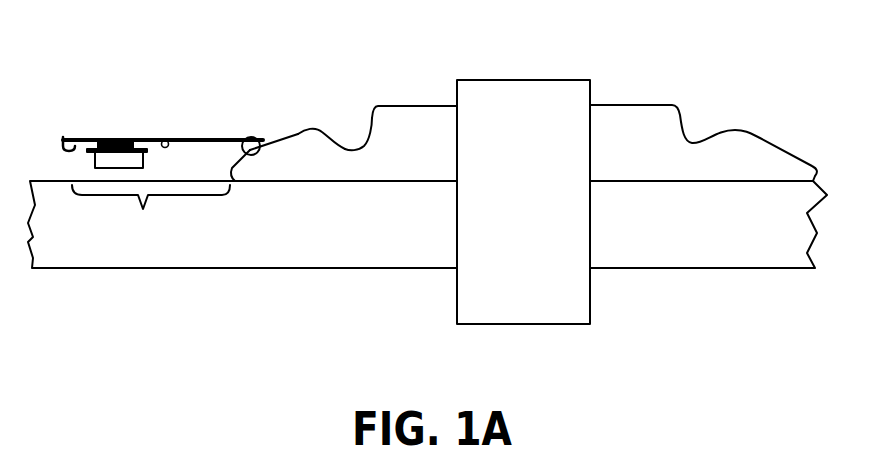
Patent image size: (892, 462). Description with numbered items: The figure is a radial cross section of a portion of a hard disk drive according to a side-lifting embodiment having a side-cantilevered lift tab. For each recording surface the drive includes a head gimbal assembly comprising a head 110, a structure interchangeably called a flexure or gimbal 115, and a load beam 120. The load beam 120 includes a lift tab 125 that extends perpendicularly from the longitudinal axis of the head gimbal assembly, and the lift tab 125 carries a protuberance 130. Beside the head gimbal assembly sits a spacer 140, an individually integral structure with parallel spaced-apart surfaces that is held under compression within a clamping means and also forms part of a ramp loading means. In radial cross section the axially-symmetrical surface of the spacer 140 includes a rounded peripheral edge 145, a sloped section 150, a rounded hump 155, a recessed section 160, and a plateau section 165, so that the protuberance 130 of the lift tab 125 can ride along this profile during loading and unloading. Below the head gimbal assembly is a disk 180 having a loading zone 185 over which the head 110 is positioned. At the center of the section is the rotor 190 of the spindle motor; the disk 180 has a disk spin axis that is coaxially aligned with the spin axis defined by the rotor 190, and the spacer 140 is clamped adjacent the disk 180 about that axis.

The head 110 is at (91, 160).
The flexure or gimbal 115 is at (109, 143).
The load beam 120 is at (126, 136).
The lift tab 125 is at (197, 137).
The protuberance 130 is at (249, 139).
The spacer 140 is at (672, 159).
The rounded peripheral edge 145 is at (234, 182).
The sloped section 150 is at (275, 154).
The rounded hump 155 is at (317, 122).
The recessed section 160 is at (352, 154).
The plateau section 165 is at (412, 104).
The disk 180 is at (37, 236).
The loading zone 185 is at (151, 214).
The rotor 190 is at (517, 78).